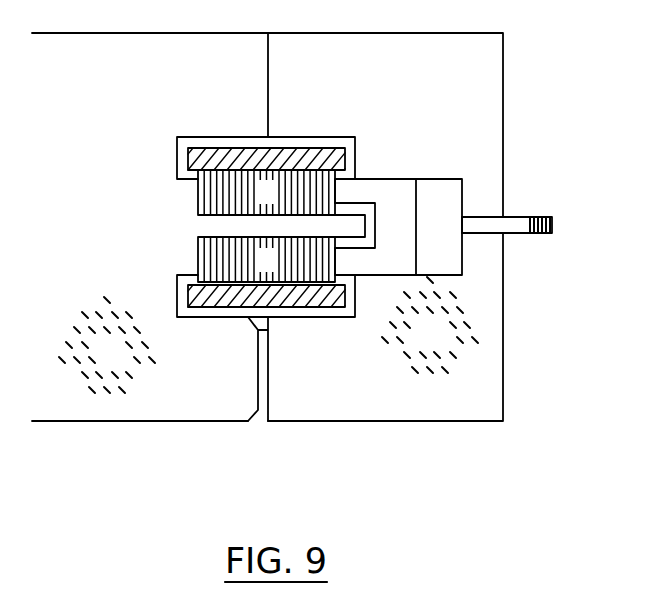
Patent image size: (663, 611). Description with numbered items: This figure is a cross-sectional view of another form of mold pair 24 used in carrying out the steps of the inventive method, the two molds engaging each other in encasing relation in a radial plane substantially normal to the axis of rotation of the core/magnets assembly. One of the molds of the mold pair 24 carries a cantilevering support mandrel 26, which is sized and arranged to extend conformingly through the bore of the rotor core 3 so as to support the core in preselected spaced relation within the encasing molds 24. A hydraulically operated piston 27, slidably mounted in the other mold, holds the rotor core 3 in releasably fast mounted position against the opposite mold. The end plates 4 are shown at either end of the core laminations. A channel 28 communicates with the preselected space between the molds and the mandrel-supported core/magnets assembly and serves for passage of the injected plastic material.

The rotor core 3 is at (260, 201).
The end plate 4 is at (236, 155).
The mold pair 24 is at (98, 363).
The cantilevering support mandrel 26 is at (223, 227).
The hydraulically operated piston 27 is at (395, 198).
The channel 28 is at (260, 383).